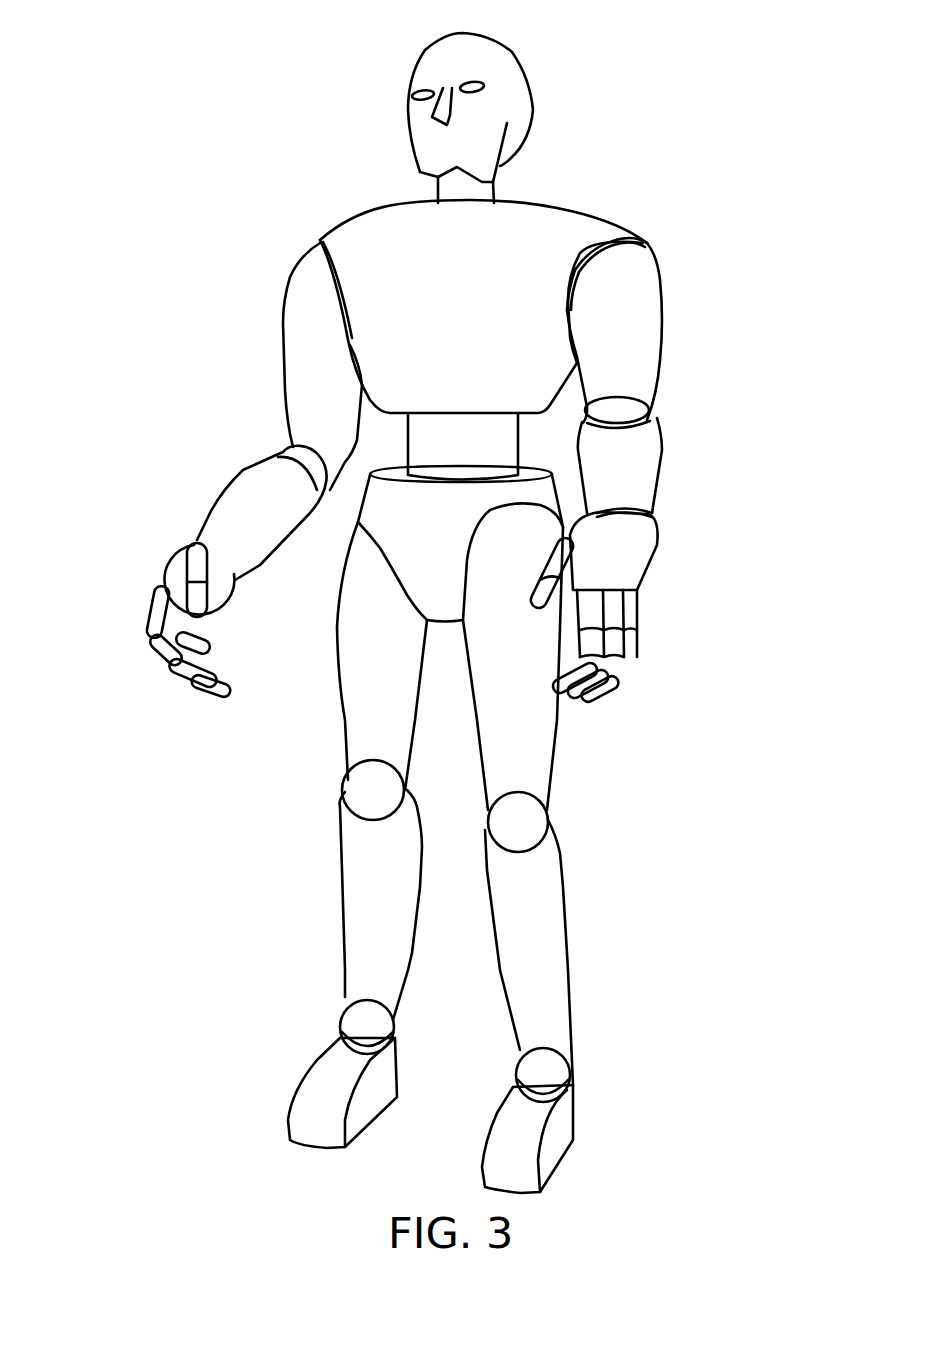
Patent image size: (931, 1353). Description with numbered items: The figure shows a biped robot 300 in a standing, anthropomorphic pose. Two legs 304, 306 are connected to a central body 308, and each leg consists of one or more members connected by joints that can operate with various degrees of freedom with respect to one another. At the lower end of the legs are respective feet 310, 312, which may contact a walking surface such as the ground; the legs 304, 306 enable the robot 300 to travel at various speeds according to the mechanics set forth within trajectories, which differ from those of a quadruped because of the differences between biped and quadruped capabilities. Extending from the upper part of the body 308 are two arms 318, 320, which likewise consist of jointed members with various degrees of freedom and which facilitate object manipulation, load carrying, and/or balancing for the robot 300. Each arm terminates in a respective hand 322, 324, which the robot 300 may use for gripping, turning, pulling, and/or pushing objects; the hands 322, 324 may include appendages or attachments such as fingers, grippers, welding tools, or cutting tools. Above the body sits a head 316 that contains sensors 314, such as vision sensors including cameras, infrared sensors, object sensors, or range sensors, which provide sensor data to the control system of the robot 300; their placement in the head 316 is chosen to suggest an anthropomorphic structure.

The robot 300 is at (688, 145).
The leg 304 is at (574, 880).
The leg 306 is at (312, 858).
The body 308 is at (333, 510).
The foot 310 is at (577, 1122).
The foot 312 is at (318, 1063).
The sensor 314 is at (424, 95).
The head 316 is at (519, 37).
The arm 318 is at (689, 473).
The arm 320 is at (200, 498).
The hand 322 is at (653, 568).
The hand 324 is at (158, 576).